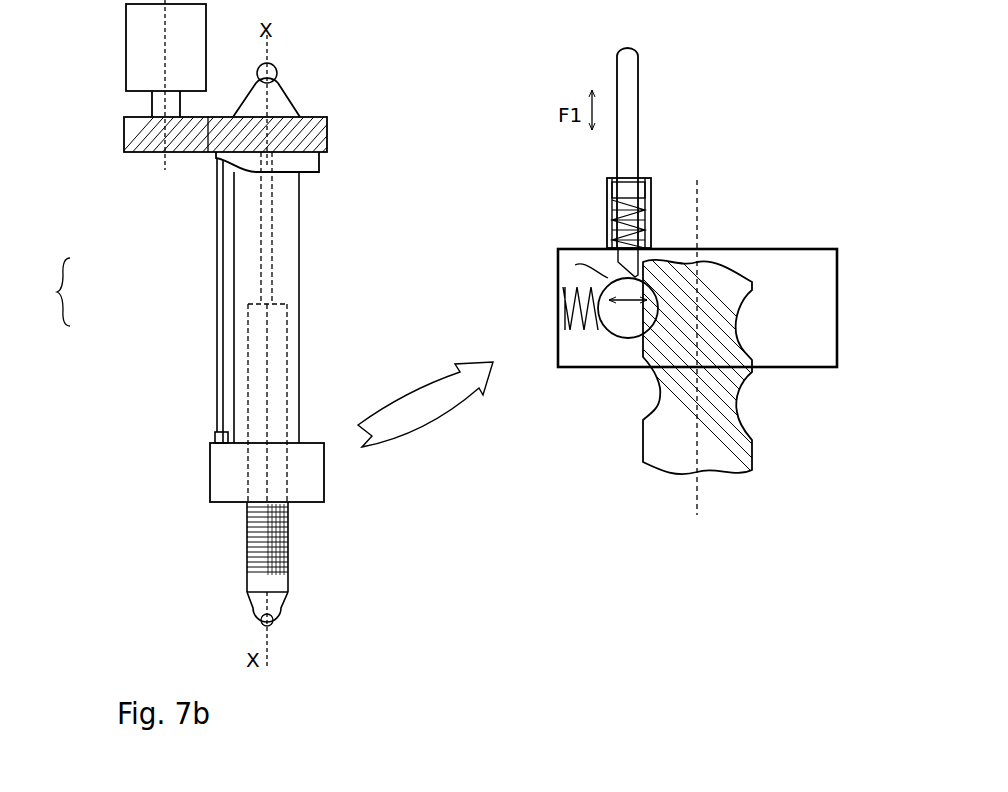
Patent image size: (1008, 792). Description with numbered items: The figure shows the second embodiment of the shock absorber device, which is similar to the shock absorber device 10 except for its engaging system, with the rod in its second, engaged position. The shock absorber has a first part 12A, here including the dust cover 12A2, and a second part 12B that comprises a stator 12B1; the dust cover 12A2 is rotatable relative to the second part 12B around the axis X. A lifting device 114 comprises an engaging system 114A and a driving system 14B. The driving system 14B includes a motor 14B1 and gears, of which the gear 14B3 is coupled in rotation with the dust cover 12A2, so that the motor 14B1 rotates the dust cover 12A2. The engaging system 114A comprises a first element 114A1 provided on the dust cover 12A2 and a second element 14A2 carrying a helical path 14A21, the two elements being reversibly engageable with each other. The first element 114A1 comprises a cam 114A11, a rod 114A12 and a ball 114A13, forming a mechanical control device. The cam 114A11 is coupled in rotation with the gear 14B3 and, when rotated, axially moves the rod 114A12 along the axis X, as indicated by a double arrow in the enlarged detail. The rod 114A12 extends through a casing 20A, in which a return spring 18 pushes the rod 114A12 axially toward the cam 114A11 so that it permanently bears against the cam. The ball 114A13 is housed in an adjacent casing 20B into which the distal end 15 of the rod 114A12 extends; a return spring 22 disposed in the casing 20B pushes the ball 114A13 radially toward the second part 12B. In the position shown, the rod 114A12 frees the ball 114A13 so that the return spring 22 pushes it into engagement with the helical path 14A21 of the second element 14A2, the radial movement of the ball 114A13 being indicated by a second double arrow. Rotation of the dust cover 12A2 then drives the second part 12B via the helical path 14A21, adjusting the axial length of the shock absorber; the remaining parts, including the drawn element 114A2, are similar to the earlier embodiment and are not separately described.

The shock absorber device 10 is at (85, 190).
The motor 14B1 is at (138, 60).
The driving system 14B is at (170, 180).
The gear 14B3 is at (302, 117).
The cam 114A11 is at (322, 158).
The guide tubes 114A2 is at (217, 250).
The dust cover 12A2 is at (299, 258).
The first part 12A is at (299, 350).
The lifting device 114 is at (44, 292).
The engaging system 114A is at (145, 395).
The first element 114A1 is at (190, 435).
The second element 14A2 is at (247, 545).
The helical path 14A21 is at (731, 323).
The second part 12B is at (288, 545).
The stator 12B1 is at (752, 458).
The rod 114A12 is at (630, 100).
The casing 20A is at (651, 182).
The distal end 15 is at (600, 270).
The return spring 18 is at (607, 228).
The casing 20B is at (838, 275).
The return spring 22 is at (557, 262).
The ball 114A13 is at (614, 343).